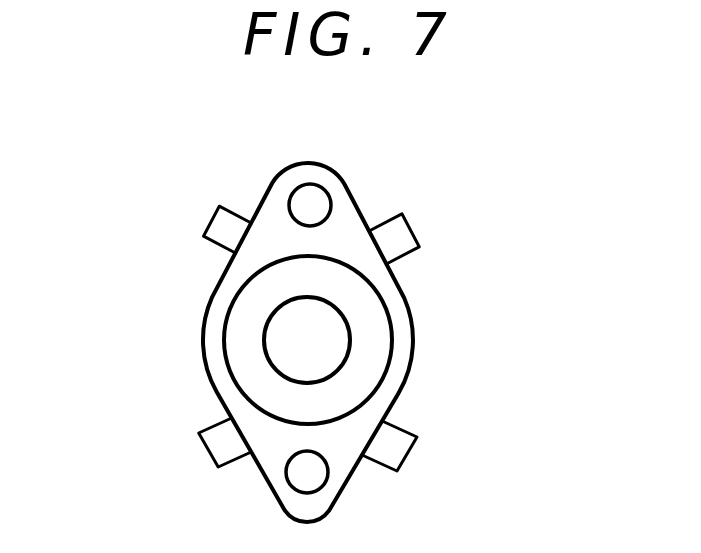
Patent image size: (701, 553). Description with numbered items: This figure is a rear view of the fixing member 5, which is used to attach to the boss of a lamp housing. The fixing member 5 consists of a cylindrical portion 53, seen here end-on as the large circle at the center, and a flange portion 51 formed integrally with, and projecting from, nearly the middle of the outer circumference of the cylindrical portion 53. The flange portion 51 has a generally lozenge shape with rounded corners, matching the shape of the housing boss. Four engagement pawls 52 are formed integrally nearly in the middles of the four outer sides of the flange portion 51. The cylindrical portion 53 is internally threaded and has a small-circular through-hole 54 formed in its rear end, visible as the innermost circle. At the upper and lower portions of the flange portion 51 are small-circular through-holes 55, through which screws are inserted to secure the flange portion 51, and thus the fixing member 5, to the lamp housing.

The fixing member 5 is at (303, 318).
The flange portion 51 is at (347, 178).
The engagement pawls 52 is at (203, 225).
The cylindrical portion 53 is at (392, 333).
The small-circular through-hole 54 is at (333, 370).
The small-circular through-holes 55 is at (296, 197).